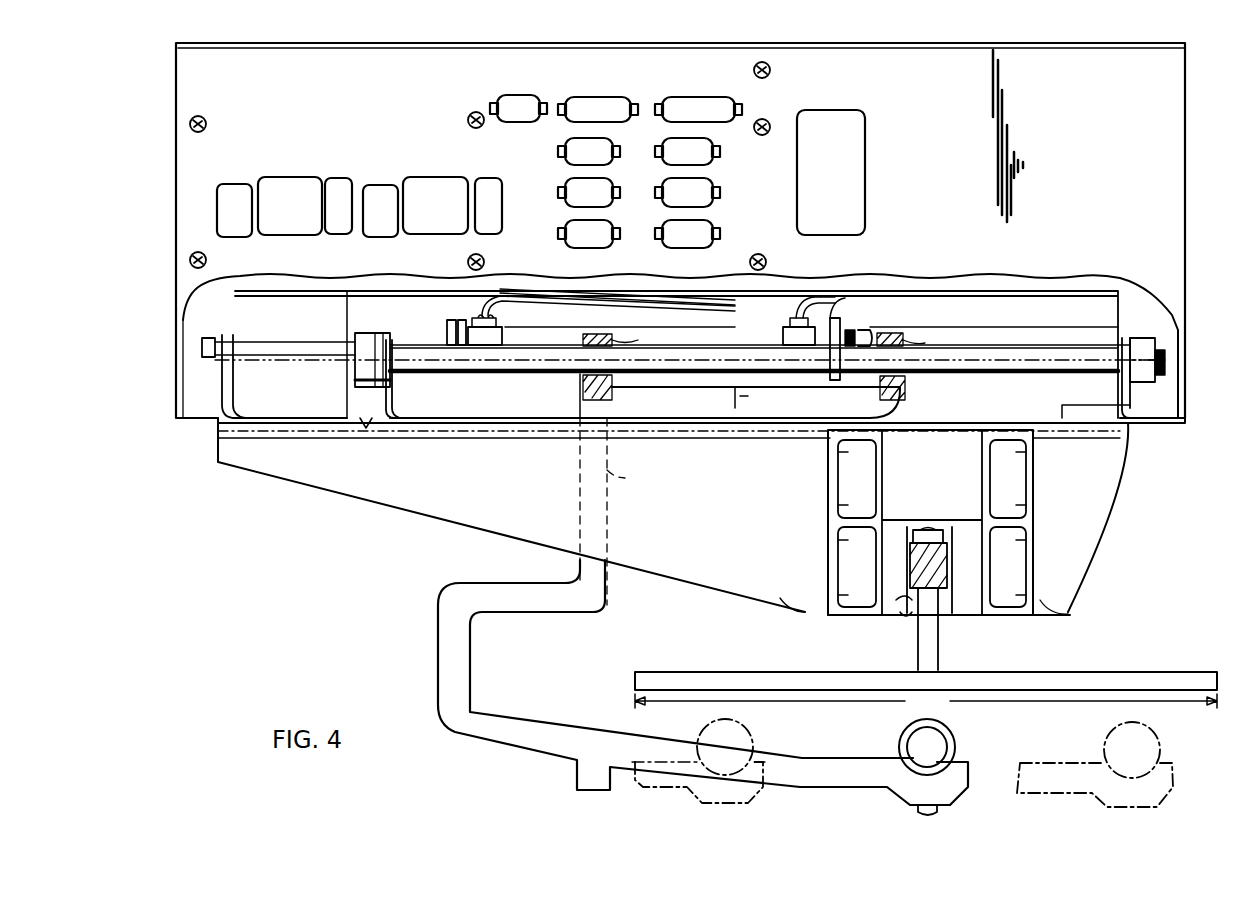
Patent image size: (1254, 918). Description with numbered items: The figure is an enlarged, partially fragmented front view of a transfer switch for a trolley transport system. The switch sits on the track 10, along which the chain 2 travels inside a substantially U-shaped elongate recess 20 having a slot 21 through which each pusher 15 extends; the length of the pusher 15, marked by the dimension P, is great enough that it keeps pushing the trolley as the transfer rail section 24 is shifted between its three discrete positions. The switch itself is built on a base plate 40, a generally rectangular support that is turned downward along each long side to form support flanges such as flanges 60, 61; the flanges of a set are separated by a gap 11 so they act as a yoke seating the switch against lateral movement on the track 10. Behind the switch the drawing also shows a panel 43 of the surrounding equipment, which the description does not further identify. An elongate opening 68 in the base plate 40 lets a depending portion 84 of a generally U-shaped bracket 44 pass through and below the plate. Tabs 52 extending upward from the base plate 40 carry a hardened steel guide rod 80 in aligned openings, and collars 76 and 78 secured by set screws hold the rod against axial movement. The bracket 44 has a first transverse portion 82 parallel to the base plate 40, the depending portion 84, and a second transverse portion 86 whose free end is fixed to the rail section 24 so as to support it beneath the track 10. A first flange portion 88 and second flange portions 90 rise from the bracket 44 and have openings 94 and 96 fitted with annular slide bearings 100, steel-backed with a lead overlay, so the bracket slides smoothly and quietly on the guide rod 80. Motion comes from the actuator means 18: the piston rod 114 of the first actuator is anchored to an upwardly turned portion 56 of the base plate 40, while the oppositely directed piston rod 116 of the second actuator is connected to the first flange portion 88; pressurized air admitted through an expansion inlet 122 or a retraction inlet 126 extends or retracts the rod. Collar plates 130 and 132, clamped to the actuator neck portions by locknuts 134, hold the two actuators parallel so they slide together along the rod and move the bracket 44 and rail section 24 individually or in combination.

The chain 2 is at (943, 532).
The track 10 is at (1030, 525).
The gap 11 is at (937, 440).
The pusher 15 is at (1012, 672).
The actuator means 18 is at (720, 321).
The U-shaped elongate recess 20 is at (928, 528).
The slot 21 is at (900, 612).
The transfer rail section 24 is at (752, 745).
The base plate 40 is at (258, 485).
The panel 43 is at (1172, 320).
The U-shaped bracket 44 is at (427, 634).
The tabs 52 is at (398, 385).
The upwardly turned portion 56 is at (234, 380).
The support flange 60 is at (790, 600).
The support flange 61 is at (1052, 600).
The elongate opening 68 is at (368, 423).
The collar 76 is at (372, 334).
The collar 78 is at (1160, 375).
The guide rod 80 is at (1065, 348).
The first transverse portion 82 is at (715, 405).
The depending portion 84 is at (612, 465).
The second transverse portion 86 is at (634, 720).
The first flange portion 88 is at (925, 343).
The second flange portion 90 is at (637, 340).
The opening 94 is at (903, 372).
The opening 96 is at (608, 370).
The annular slide bearing 100 is at (590, 338).
The piston rod 114 is at (288, 342).
The piston rod 116 is at (868, 340).
The expansion inlet 122 is at (500, 322).
The retraction inlet 126 is at (783, 336).
The collar plate 130 is at (486, 300).
The collar plate 132 is at (841, 305).
The locknut 134 is at (455, 320).